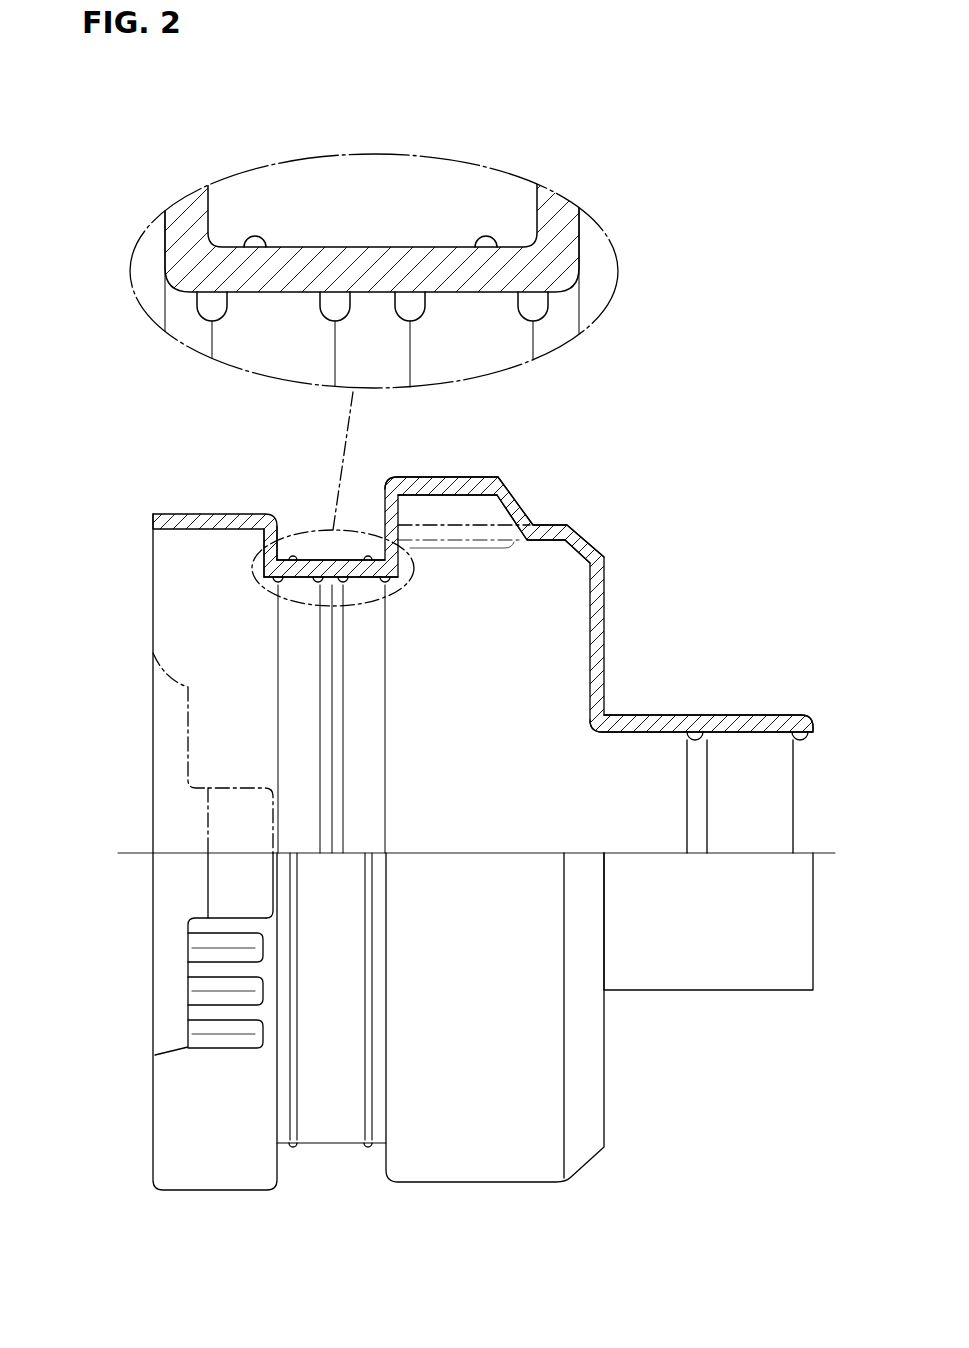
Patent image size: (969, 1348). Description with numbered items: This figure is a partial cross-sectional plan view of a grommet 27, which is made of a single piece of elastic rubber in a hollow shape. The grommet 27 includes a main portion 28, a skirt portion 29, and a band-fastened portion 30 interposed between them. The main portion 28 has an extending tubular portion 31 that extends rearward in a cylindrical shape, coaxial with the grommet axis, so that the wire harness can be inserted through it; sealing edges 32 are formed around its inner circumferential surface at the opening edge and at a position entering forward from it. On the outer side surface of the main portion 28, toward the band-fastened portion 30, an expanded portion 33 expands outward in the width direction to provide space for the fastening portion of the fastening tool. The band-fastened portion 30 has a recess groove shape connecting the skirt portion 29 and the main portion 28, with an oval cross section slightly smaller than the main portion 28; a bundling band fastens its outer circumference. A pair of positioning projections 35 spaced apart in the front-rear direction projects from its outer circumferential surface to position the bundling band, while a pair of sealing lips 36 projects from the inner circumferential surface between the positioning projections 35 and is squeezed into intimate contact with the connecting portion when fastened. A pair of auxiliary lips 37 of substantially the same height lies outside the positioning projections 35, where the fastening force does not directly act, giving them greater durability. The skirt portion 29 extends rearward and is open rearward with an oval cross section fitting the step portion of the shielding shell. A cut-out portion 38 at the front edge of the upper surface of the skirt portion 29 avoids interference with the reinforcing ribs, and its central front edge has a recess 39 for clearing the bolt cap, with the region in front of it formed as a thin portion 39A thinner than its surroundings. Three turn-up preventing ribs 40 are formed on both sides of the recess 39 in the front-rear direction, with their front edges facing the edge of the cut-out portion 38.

The grommet 27 is at (505, 1186).
The main portion 28 is at (553, 530).
The skirt portion 29 is at (208, 1178).
The band-fastened portion 30 is at (380, 245).
The extending tubular portion 31 is at (650, 718).
The sealing edges 32 is at (800, 740).
The expanded portion 33 is at (480, 478).
The positioning projections 35 is at (486, 236).
The sealing lips 36 is at (412, 300).
The auxiliary lips 37 is at (540, 303).
The cut-out portion 38 is at (175, 813).
The recess 39 is at (175, 905).
The thin portion 39A is at (230, 884).
The turn-up preventing ribs 40 is at (187, 1025).